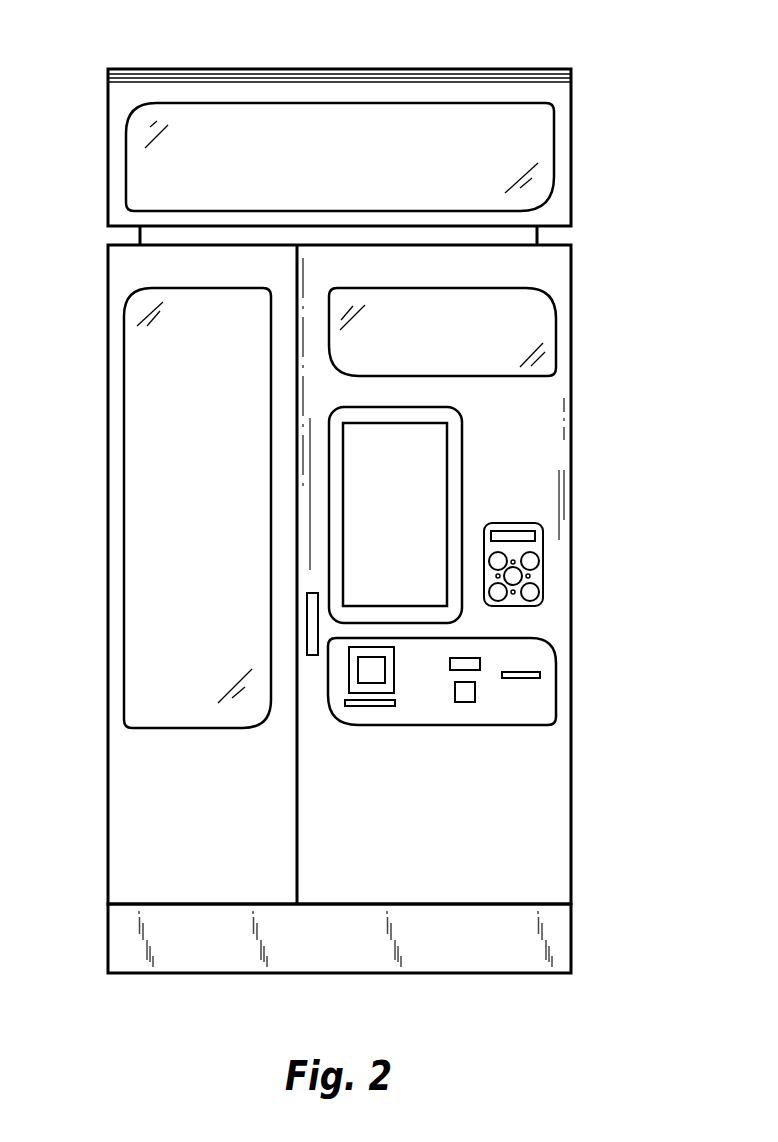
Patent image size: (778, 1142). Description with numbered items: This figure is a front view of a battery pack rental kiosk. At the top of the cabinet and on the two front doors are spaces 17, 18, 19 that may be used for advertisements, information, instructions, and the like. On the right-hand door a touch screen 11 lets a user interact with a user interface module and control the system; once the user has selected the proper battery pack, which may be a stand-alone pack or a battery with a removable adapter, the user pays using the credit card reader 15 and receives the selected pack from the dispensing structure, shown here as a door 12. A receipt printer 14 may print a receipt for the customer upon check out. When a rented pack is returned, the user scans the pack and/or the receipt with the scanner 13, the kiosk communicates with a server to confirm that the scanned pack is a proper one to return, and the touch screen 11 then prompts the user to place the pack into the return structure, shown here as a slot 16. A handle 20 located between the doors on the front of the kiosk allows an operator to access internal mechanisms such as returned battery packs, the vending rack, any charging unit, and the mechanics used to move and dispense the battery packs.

The touch screen 11 is at (430, 478).
The door 12 is at (533, 576).
The scanner 13 is at (465, 690).
The receipt printer 14 is at (385, 706).
The credit card reader 15 is at (527, 676).
The slot 16 is at (373, 670).
The space 17 is at (143, 440).
The space 18 is at (245, 122).
The space 19 is at (523, 308).
The handle 20 is at (307, 632).